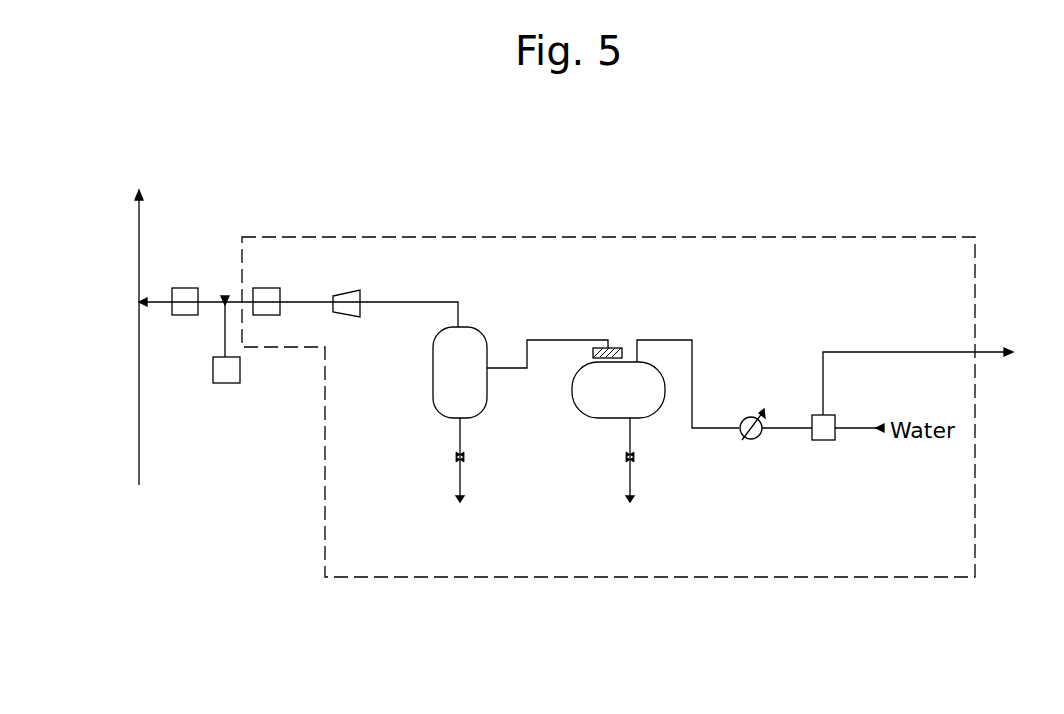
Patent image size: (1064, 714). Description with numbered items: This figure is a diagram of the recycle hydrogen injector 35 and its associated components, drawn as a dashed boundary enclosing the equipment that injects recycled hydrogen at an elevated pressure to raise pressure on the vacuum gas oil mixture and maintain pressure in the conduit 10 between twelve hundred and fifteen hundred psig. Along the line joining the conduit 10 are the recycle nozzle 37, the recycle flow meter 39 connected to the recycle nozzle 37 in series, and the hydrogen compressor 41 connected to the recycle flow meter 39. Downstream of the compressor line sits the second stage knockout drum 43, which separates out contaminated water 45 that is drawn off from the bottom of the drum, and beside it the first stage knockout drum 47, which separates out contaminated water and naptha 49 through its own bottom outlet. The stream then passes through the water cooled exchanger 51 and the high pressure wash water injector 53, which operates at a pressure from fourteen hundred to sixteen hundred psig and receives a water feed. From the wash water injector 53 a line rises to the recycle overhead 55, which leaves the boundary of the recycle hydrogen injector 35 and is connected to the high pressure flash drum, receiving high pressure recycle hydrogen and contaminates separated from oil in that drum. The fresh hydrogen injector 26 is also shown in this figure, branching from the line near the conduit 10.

The conduit 10 is at (140, 382).
The fresh hydrogen injector 26 is at (240, 377).
The recycle hydrogen injector 35 is at (582, 578).
The recycle nozzle 37 is at (185, 286).
The recycle flow meter 39 is at (266, 287).
The hydrogen compressor 41 is at (355, 290).
The second stage knockout drum 43 is at (433, 404).
The contaminated water 45 is at (462, 481).
The first stage knockout drum 47 is at (590, 416).
The contaminated water and naptha 49 is at (632, 481).
The water cooled exchanger 51 is at (754, 440).
The high pressure wash water injector 53 is at (829, 441).
The recycle overhead 55 is at (936, 379).